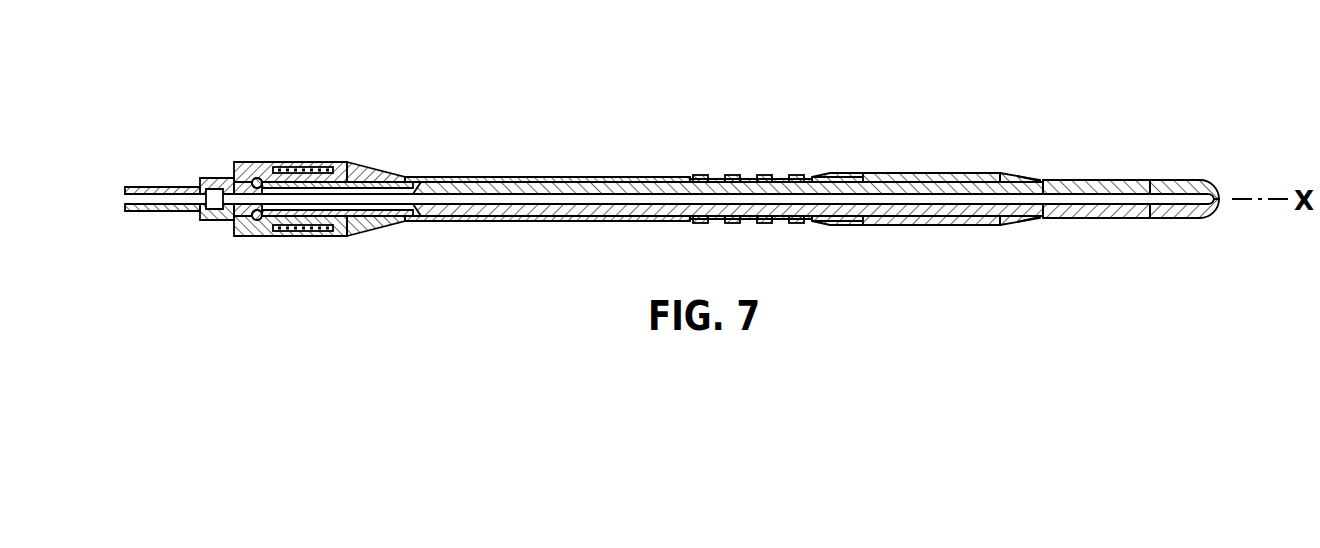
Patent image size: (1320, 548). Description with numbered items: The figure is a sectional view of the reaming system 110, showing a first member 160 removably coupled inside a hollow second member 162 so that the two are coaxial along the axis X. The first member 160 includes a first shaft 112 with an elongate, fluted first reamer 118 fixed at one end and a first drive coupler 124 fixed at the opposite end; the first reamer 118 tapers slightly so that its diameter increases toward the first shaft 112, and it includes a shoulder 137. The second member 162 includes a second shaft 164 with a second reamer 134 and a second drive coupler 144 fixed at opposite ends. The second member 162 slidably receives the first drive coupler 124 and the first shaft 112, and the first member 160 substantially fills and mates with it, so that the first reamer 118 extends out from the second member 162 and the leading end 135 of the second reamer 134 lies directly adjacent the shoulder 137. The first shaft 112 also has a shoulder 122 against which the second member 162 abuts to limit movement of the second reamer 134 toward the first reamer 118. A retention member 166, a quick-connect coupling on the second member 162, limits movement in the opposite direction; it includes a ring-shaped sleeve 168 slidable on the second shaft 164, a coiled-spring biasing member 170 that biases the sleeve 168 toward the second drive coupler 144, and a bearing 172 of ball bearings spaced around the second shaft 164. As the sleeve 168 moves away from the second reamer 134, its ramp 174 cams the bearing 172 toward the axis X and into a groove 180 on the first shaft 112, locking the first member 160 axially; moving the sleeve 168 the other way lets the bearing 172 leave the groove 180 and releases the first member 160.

The system 110 is at (684, 181).
The first shaft 112 is at (593, 182).
The first reamer 118 is at (1038, 180).
The shoulder 122 is at (845, 175).
The first drive coupler 124 is at (222, 221).
The second reamer 134 is at (898, 172).
The leading end 135 is at (1008, 172).
The shoulder 137 is at (1017, 176).
The second drive coupler 144 is at (137, 187).
The first member 160 is at (1089, 170).
The second member 162 is at (668, 170).
The second shaft 164 is at (517, 178).
The retention member 166 is at (263, 164).
The sleeve 168 is at (293, 174).
The biasing member 170 is at (328, 173).
The bearing 172 is at (258, 178).
The ramp 174 is at (248, 174).
The groove 180 is at (248, 226).